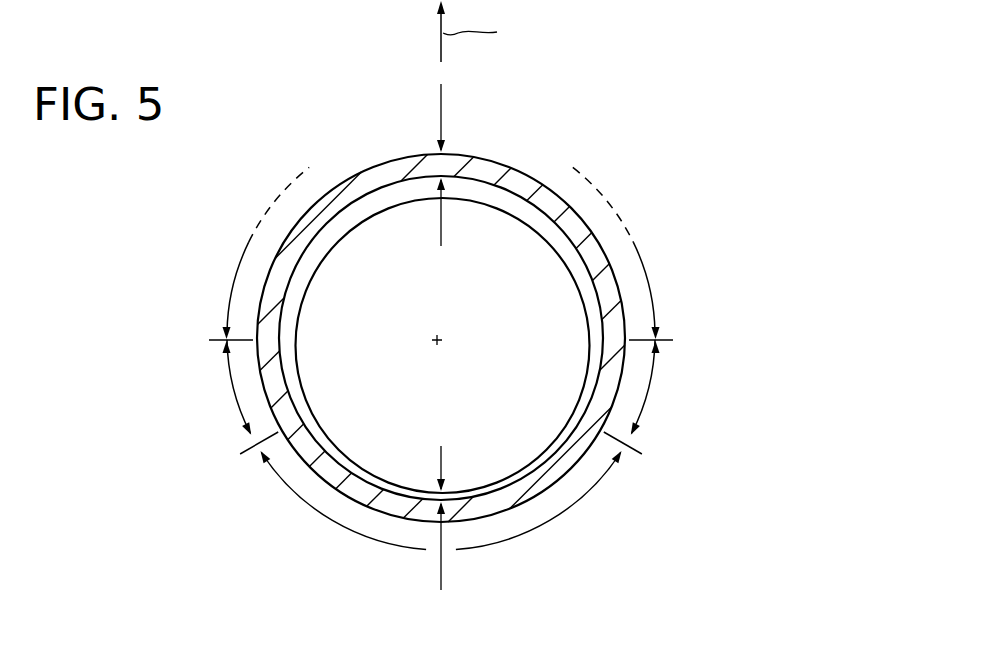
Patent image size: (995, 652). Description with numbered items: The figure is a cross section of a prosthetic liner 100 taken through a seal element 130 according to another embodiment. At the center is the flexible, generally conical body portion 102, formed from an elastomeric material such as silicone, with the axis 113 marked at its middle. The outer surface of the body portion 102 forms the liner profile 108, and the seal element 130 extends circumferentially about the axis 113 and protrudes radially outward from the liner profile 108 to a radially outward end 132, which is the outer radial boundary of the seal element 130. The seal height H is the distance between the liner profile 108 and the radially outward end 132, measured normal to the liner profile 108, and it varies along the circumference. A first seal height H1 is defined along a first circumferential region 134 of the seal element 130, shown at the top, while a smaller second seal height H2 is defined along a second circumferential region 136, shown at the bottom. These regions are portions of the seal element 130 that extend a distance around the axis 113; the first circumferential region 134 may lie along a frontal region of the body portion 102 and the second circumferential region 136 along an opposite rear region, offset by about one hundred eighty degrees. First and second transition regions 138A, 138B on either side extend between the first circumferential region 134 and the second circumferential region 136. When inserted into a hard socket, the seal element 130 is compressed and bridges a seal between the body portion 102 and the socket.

The prosthetic liner 100 is at (750, 304).
The seal element 130 is at (562, 133).
The radially outward end 132 is at (364, 168).
The liner profile 108 is at (548, 459).
The body portion 102 is at (576, 268).
The axis 113 is at (432, 344).
The first circumferential region 134 is at (656, 242).
The second circumferential region 136 is at (321, 517).
The first transition region 138A is at (232, 398).
The second transition region 138B is at (647, 394).